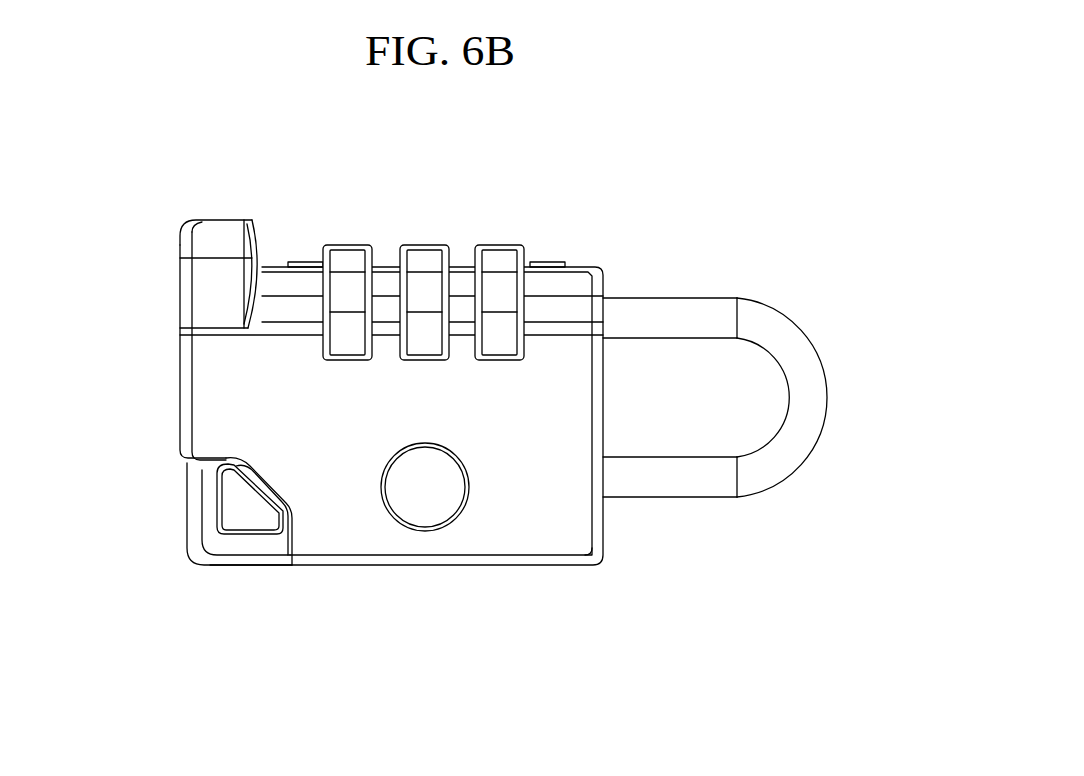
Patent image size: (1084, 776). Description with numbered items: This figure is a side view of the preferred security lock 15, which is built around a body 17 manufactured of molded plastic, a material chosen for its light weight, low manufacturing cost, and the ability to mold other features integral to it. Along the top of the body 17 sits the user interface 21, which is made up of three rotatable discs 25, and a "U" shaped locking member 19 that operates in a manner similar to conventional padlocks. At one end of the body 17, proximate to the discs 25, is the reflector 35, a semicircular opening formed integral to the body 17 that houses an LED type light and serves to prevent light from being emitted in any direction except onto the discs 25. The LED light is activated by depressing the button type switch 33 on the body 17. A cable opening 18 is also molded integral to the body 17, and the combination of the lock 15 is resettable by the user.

The security lock 15 is at (508, 398).
The body 17 is at (465, 424).
The cable opening 18 is at (192, 533).
The "U" shaped locking member 19 is at (768, 397).
The user interface 21 is at (294, 253).
The rotatable discs 25 is at (450, 263).
The button type switch 33 is at (475, 548).
The reflector 35 is at (170, 247).